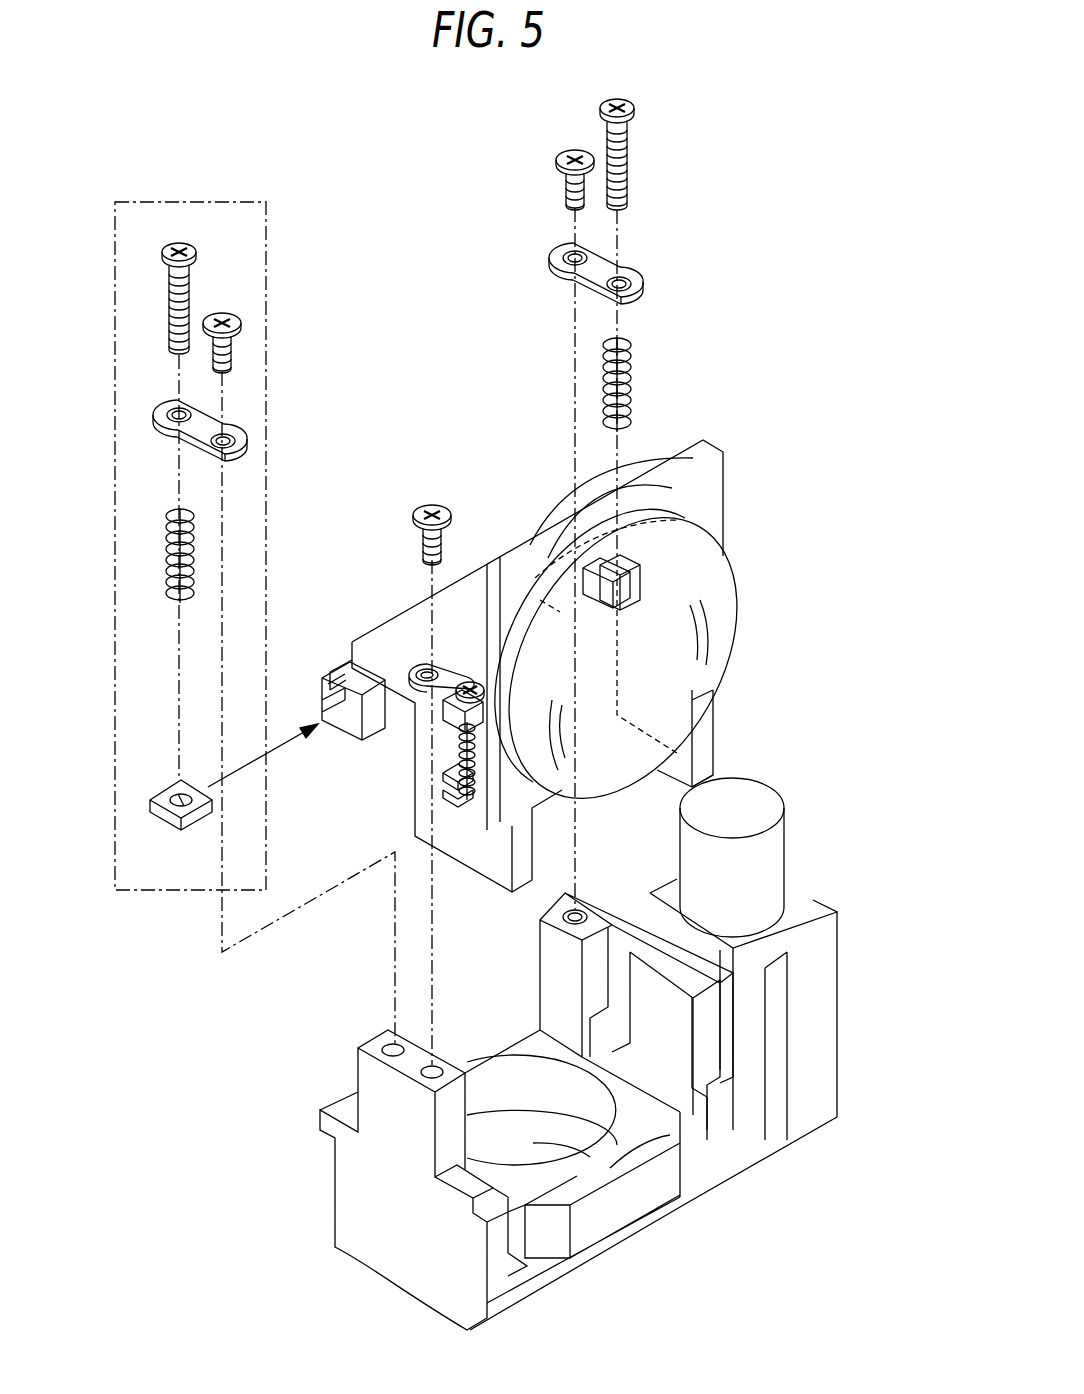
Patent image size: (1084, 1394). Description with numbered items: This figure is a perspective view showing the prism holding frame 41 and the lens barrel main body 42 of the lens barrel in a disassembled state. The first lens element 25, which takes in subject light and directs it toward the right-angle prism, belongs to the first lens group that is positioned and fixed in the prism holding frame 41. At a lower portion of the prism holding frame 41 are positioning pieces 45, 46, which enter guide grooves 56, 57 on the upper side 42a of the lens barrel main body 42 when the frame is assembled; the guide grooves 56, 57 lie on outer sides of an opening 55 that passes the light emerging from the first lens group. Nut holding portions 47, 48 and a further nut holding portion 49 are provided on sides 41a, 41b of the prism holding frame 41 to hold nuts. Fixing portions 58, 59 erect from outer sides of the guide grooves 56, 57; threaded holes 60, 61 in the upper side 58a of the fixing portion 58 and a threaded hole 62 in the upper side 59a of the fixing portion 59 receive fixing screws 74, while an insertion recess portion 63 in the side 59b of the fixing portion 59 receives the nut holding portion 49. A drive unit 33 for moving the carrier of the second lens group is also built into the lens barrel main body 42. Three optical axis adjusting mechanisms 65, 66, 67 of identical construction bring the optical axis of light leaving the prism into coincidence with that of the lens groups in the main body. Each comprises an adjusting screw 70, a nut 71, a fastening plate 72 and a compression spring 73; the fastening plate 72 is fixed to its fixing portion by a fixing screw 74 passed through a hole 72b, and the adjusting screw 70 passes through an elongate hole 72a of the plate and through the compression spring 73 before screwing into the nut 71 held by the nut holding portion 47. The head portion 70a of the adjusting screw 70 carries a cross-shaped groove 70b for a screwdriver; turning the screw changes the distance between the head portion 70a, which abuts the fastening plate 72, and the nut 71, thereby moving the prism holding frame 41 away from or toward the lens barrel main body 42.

The first lens element 25 is at (735, 560).
The drive unit 33 is at (808, 862).
The prism holding frame 41 is at (740, 482).
The left end portion of frame 41a is at (352, 660).
The side 41b is at (642, 458).
The lens barrel main body 42 is at (360, 1220).
The upper side 42a is at (690, 1175).
The positioning piece 45 is at (520, 870).
The positioning piece 46 is at (712, 740).
The nut holding portion 47 is at (368, 730).
The nut holding portion 48 is at (445, 745).
The nut holding portion 49 is at (640, 608).
The opening 55 is at (580, 1170).
The guide groove 56 is at (503, 1190).
The guide groove 57 is at (700, 1165).
The fixing portion 58 is at (352, 1092).
The upper side 58a is at (368, 1048).
The fixing portion 59 is at (555, 968).
The upper side 59a is at (598, 912).
The side 59b is at (618, 1060).
The threaded hole 60 is at (390, 1044).
The threaded hole 61 is at (432, 1066).
The threaded hole 62 is at (578, 905).
The insertion recess portion 63 is at (620, 992).
The optical axis adjusting mechanism 65 is at (192, 192).
The optical axis adjusting mechanism 66 is at (400, 645).
The optical axis adjusting mechanism 67 is at (735, 262).
The adjusting screw 70 is at (190, 285).
The head portion 70a is at (172, 248).
The groove 70b is at (188, 246).
The nut 71 is at (180, 812).
The fastening plate 72 is at (230, 432).
The first hole of plate 72a is at (172, 410).
The hole 72b is at (248, 452).
The compression spring 73 is at (172, 580).
The fixing screw 74 is at (235, 358).